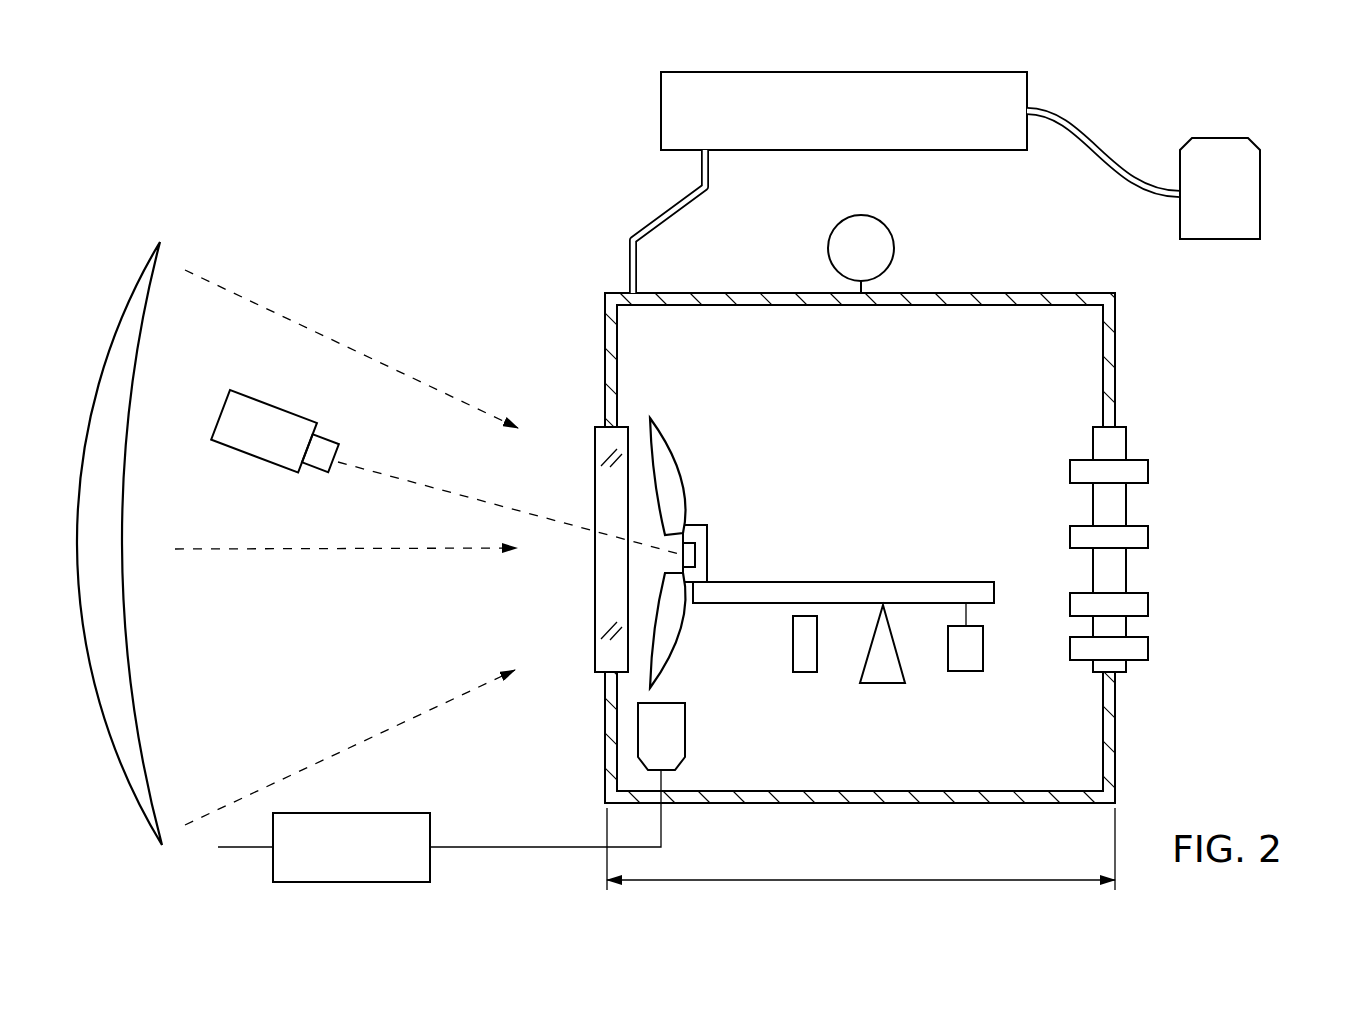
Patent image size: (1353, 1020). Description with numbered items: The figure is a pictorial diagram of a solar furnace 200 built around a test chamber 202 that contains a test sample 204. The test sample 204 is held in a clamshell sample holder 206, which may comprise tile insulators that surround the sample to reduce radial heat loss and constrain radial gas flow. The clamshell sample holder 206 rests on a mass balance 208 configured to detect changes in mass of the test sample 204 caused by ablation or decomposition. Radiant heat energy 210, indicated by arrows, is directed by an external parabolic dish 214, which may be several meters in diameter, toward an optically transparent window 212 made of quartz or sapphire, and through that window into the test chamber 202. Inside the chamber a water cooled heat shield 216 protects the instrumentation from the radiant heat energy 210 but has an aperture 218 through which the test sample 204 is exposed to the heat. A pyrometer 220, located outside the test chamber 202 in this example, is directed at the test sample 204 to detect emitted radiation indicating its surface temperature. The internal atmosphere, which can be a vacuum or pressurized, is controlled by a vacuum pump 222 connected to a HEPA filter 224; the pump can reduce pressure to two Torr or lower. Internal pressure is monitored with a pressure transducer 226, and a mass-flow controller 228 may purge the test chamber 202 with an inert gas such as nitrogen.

The solar furnace 200 is at (372, 135).
The test chamber 202 is at (1115, 750).
The test sample 204 is at (687, 540).
The clamshell sample holder 206 is at (708, 557).
The mass balance 208 is at (847, 582).
The radiant heat energy 210 is at (337, 343).
The optically transparent window 212 is at (595, 488).
The external parabolic dish 214 is at (143, 250).
The water cooled heat shield 216 is at (675, 450).
The aperture 218 is at (655, 560).
The pyrometer 220 is at (252, 458).
The vacuum pump 222 is at (845, 72).
The HEPA filter 224 is at (1260, 195).
The pressure transducer 226 is at (858, 213).
The mass-flow controller 228 is at (352, 882).